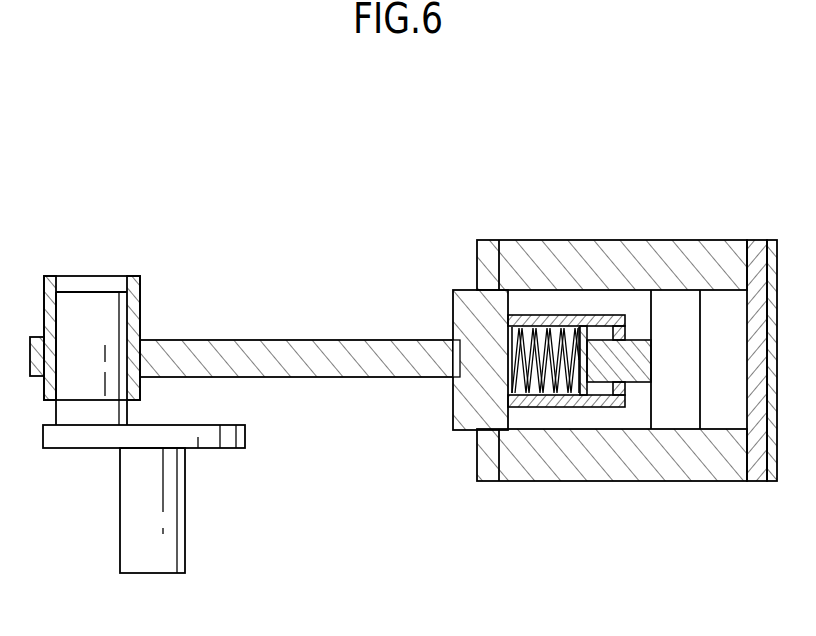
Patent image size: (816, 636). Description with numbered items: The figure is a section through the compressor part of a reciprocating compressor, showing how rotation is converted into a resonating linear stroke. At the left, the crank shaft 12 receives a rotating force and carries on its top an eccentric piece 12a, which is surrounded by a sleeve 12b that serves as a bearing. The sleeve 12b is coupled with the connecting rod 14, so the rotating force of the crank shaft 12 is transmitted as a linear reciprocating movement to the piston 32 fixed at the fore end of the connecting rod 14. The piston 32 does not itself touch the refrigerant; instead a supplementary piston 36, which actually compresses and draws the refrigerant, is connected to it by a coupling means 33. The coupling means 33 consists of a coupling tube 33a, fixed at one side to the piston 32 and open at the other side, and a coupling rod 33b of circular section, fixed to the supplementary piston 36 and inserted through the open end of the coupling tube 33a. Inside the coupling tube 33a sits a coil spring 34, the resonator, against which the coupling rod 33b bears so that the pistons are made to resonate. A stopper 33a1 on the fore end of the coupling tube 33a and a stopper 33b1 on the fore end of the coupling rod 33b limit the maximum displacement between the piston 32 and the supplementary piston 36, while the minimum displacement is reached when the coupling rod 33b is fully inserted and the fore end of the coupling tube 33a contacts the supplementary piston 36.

The crank shaft 12 is at (148, 560).
The eccentric piece 12a is at (100, 298).
The sleeve 12b is at (141, 297).
The connecting rod 14 is at (262, 372).
The piston 32 is at (489, 416).
The coupling means 33 is at (629, 392).
The coupling tube 33a is at (595, 366).
The stopper 33a1 is at (625, 326).
The coupling rod 33b is at (656, 366).
The stopper 33b1 is at (583, 322).
The coil spring 34 is at (528, 397).
The supplementary piston 36 is at (678, 312).